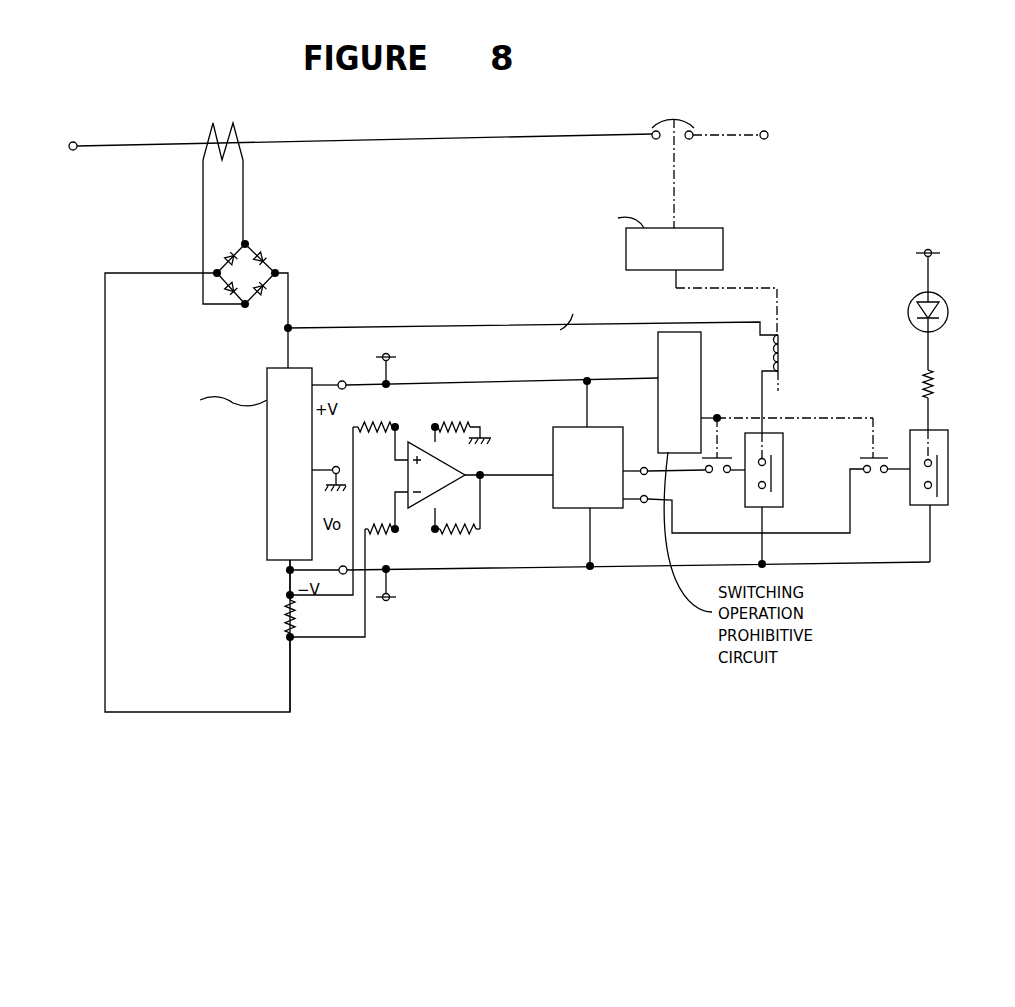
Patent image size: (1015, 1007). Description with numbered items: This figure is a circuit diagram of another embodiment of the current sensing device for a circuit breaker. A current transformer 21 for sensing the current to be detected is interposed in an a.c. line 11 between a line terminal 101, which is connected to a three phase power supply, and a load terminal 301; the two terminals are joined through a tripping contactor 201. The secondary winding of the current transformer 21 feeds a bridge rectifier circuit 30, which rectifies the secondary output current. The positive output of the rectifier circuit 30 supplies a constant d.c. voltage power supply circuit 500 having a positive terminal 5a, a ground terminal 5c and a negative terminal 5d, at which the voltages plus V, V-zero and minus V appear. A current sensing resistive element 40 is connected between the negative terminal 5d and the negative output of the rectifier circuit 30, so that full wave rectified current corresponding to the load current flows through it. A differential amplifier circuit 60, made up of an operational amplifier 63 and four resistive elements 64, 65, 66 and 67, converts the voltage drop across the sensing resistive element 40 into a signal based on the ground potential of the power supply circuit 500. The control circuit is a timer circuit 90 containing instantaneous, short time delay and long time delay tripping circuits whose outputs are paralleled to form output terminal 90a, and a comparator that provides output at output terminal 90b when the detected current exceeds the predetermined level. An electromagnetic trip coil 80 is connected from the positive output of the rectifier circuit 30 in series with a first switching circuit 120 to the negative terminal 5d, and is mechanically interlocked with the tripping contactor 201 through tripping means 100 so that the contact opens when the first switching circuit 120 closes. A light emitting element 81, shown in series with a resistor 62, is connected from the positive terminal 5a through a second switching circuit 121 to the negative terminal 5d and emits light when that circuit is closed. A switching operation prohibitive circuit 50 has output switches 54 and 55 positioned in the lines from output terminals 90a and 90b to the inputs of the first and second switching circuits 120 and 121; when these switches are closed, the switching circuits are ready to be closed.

The a.c. line 11 is at (428, 140).
The load terminal 301 is at (74, 141).
The current transformer 21 is at (236, 134).
The bridge rectifier circuit 30 is at (244, 268).
The tripping contactor 201 is at (650, 124).
The line terminal 101 is at (768, 129).
The tripping means 100 is at (724, 246).
The electromagnetic trip coil 80 is at (787, 350).
The switching operation prohibitive circuit 50 is at (702, 375).
The output switch 54 is at (709, 476).
The output switch 55 is at (873, 476).
The first switching circuit 120 is at (783, 470).
The second switching circuit 121 is at (943, 448).
The positive terminal 5a is at (930, 250).
The light emitting element 81 is at (949, 312).
The resistor 62 is at (940, 388).
The timer circuit 90 is at (562, 427).
The output terminal 90a is at (642, 466).
The output terminal 90b is at (645, 504).
The negative terminal 5d is at (388, 601).
The constant d.c. voltage power supply circuit 500 is at (267, 485).
The ground terminal 5c is at (341, 473).
The current sensing resistive element 40 is at (287, 605).
The resistive element 64 is at (378, 420).
The resistive element 66 is at (460, 420).
The resistive element 65 is at (382, 535).
The resistive element 67 is at (458, 535).
The differential amplifier circuit 60 is at (421, 437).
The operational amplifier 63 is at (475, 478).